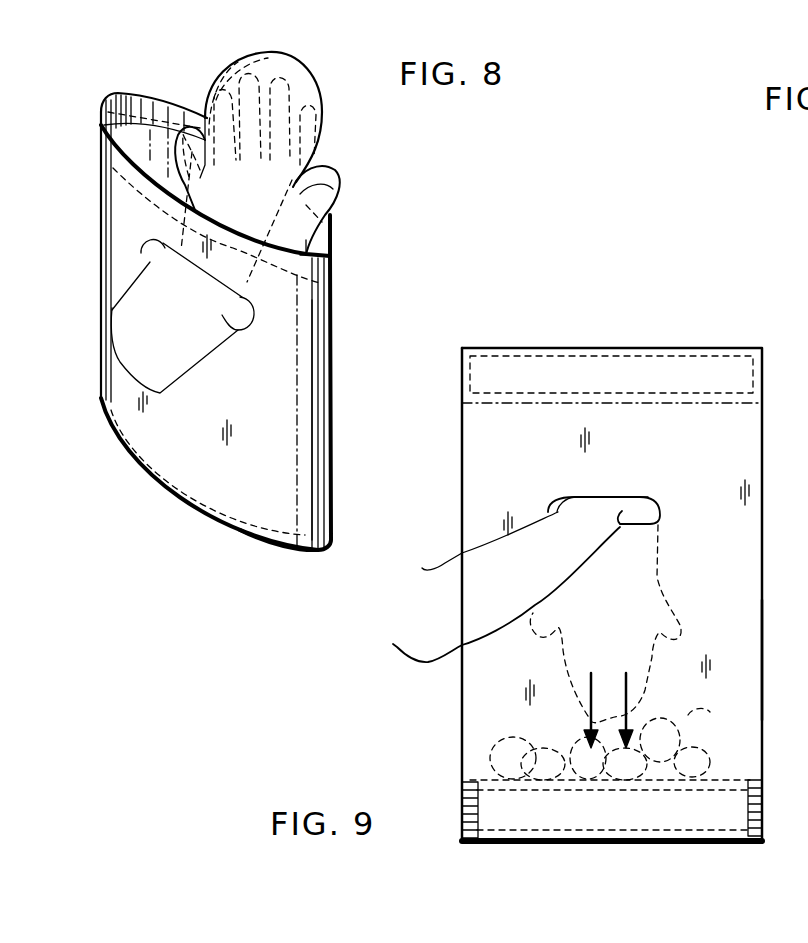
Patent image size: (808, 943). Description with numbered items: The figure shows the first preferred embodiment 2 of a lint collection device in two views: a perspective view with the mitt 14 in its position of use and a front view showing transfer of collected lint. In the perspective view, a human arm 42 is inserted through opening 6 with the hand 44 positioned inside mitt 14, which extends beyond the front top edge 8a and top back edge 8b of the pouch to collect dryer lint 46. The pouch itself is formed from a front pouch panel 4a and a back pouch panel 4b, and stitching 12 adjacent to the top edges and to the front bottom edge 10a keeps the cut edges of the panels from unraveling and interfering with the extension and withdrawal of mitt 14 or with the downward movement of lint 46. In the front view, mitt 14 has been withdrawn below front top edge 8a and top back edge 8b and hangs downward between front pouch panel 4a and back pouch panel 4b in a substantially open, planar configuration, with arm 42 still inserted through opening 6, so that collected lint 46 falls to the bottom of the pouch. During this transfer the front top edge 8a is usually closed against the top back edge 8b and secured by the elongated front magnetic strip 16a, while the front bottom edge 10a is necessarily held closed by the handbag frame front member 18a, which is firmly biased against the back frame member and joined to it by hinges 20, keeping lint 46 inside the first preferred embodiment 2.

In FIG. 8, the first preferred embodiment 2 is at (123, 92).
In FIG. 9, the first preferred embodiment 2 is at (766, 349).
In FIG. 8, the front pouch panel 4a is at (316, 456).
In FIG. 9, the front pouch panel 4a is at (763, 664).
In FIG. 8, the back pouch panel 4b is at (305, 250).
In FIG. 8, the opening 6 is at (247, 315).
In FIG. 9, the opening 6 is at (660, 510).
In FIG. 8, the front top edge 8a is at (111, 146).
In FIG. 9, the front top edge 8a is at (683, 347).
In FIG. 8, the top back edge 8b is at (326, 212).
In FIG. 8, the front bottom edge 10a is at (274, 548).
In FIG. 9, the front bottom edge 10a is at (554, 844).
In FIG. 8, the stitching 12 is at (330, 226).
In FIG. 9, the stitching 12 is at (746, 405).
In FIG. 8, the mitt 14 is at (320, 88).
In FIG. 9, the mitt 14 is at (657, 553).
In FIG. 9, the elongated front magnetic strip 16a is at (478, 380).
In FIG. 9, the handbag frame front member 18a is at (700, 822).
In FIG. 9, the hinges 20 is at (462, 820).
In FIG. 8, the human arm 42 is at (127, 315).
In FIG. 9, the human arm 42 is at (452, 575).
In FIG. 8, the hand 44 is at (222, 78).
In FIG. 9, the dryer lint 46 is at (695, 712).